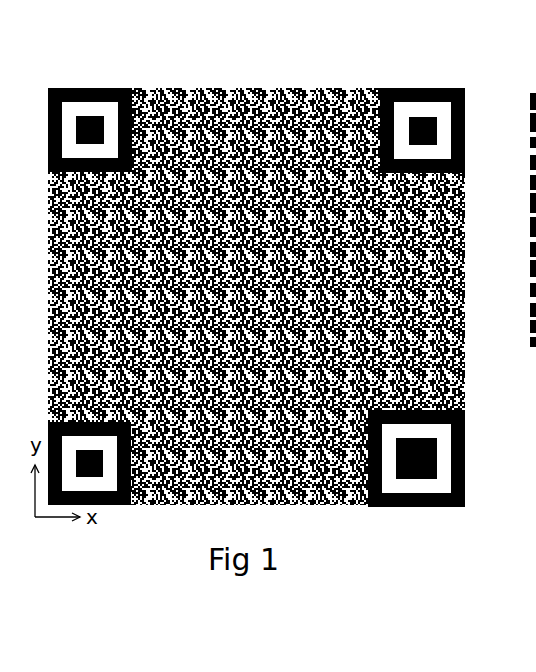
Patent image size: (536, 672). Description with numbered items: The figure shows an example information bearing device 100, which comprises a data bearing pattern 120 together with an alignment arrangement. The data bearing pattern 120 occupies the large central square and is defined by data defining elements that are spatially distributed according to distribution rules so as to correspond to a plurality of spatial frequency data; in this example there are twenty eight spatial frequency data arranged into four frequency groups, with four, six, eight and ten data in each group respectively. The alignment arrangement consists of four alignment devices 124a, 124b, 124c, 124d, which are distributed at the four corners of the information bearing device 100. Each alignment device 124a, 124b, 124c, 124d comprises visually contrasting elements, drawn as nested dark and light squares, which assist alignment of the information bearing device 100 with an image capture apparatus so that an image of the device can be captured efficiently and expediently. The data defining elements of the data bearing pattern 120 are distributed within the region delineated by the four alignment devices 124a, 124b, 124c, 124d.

The information bearing device 100 is at (268, 303).
The data bearing pattern 120 is at (268, 78).
The alignment device 124a is at (118, 82).
The alignment device 124b is at (417, 80).
The alignment device 124c is at (118, 515).
The alignment device 124d is at (410, 510).